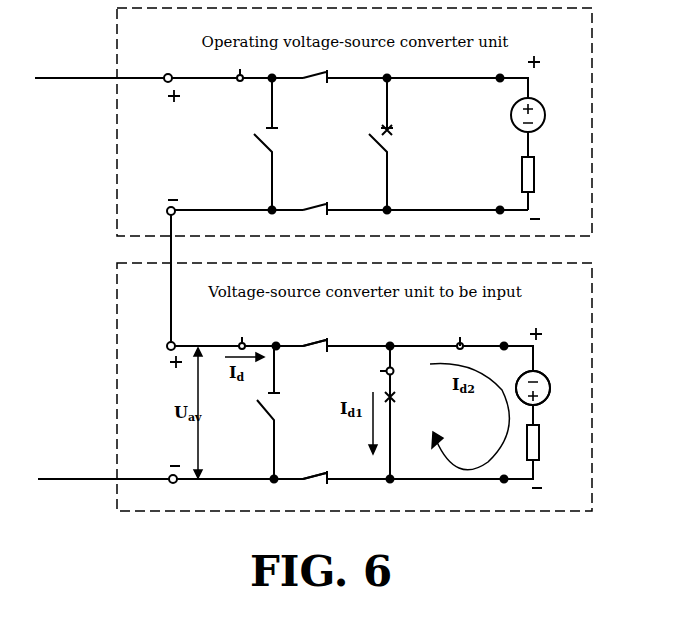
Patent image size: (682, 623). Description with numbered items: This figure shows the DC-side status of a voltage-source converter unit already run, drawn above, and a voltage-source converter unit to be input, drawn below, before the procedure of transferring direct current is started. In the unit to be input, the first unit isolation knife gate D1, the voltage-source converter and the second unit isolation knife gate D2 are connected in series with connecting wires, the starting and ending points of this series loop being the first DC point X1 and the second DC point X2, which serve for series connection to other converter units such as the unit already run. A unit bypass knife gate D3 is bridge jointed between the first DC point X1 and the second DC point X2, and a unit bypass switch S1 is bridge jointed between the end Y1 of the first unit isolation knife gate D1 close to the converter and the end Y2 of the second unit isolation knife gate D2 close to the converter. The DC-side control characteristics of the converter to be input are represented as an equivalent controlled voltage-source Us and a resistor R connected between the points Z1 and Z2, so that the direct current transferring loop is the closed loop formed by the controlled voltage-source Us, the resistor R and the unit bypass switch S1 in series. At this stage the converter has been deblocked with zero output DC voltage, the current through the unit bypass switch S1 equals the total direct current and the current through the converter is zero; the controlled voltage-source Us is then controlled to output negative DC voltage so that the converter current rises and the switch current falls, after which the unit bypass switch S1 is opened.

The first DC point X1 is at (184, 339).
The second DC point X2 is at (173, 491).
The end of the first unit isolation knife gate close to the voltage-source converter Y1 is at (388, 337).
The end of the second unit isolation knife gate close to the voltage-source converte Y2 is at (388, 493).
The positive source node Z1 is at (504, 337).
The negative source node Z2 is at (506, 493).
The first unit isolation knife gate D1 is at (300, 336).
The second unit isolation knife gate D2 is at (315, 469).
The unit bypass knife gate D3 is at (280, 414).
The unit bypass switch S1 is at (400, 412).
The resistor R is at (548, 442).
The controlled voltage-source Us is at (545, 388).